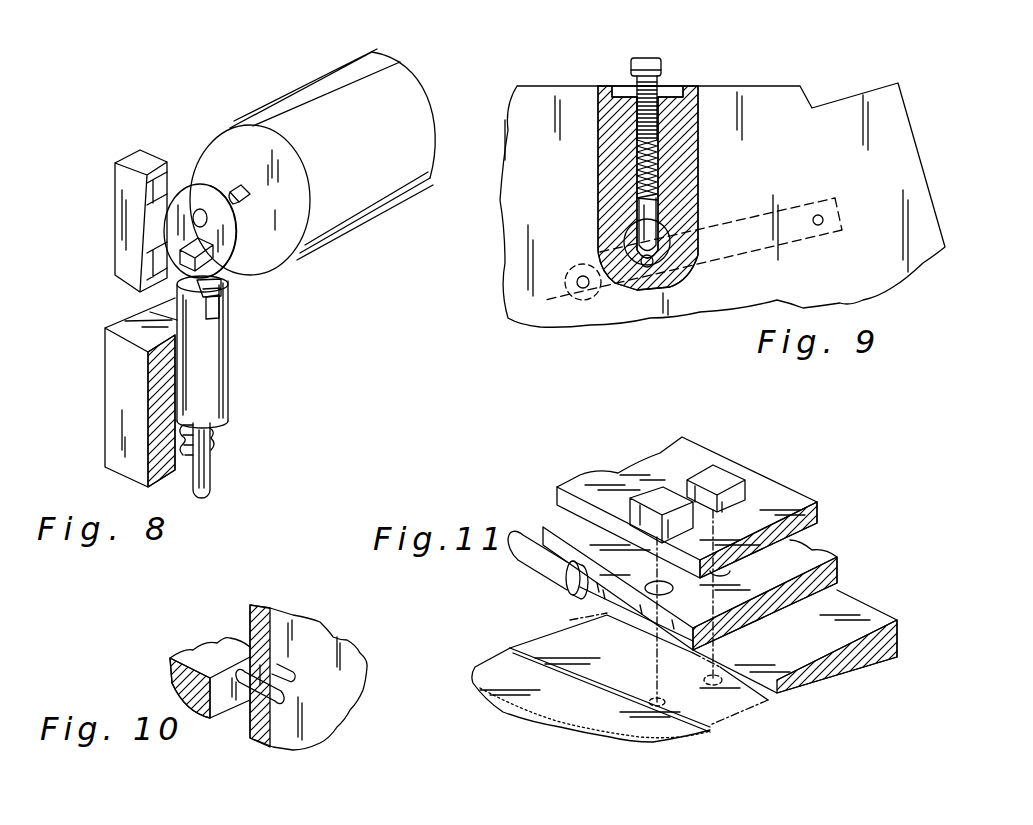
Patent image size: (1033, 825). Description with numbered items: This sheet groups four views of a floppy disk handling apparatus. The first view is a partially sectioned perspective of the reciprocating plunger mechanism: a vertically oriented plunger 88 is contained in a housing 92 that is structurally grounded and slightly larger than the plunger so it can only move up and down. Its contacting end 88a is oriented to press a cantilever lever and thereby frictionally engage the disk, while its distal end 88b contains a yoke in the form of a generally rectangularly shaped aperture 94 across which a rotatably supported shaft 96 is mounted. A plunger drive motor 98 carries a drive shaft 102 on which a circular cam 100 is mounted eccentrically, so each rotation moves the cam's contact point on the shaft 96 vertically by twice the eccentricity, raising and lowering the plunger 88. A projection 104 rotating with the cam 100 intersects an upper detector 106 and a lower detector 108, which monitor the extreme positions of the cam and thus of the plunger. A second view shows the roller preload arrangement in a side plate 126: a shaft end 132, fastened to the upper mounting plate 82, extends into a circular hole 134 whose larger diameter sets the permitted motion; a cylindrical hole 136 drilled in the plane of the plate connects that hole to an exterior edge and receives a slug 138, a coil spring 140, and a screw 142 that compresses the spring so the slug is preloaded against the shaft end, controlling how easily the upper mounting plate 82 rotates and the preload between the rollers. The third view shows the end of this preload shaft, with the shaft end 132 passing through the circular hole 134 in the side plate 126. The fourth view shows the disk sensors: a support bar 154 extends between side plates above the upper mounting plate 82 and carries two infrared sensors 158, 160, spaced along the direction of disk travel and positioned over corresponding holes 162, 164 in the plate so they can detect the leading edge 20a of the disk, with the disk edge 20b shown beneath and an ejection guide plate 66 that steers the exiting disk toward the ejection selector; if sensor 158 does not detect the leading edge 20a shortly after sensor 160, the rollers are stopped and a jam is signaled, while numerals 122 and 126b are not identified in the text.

In FIG. 8, the plunger drive motor 98 is at (307, 100).
In FIG. 8, the drive shaft 102 is at (238, 190).
In FIG. 8, the circular cam 100 is at (236, 243).
In FIG. 8, the projection 104 is at (232, 266).
In FIG. 8, the upper detector 106 is at (170, 177).
In FIG. 8, the lower detector 108 is at (158, 272).
In FIG. 8, the plunger 88 is at (221, 368).
In FIG. 8, the rotatably supported shaft 96 is at (220, 303).
In FIG. 8, the generally rectangularly shaped aperture 94 is at (212, 313).
In FIG. 8, the contacting end 88a is at (211, 487).
In FIG. 8, the distal end 88b is at (150, 312).
In FIG. 8, the housing 92 is at (158, 395).
In FIG. 9, the side plate 126 is at (670, 163).
In FIG. 10, the side plate 126 is at (313, 643).
In FIG. 9, the cylindrical hole 136 is at (663, 168).
In FIG. 9, the slug 138 is at (677, 203).
In FIG. 9, the screw 142 is at (662, 68).
In FIG. 9, the coil spring 140 is at (634, 177).
In FIG. 9, the circular hole 134 is at (634, 240).
In FIG. 10, the circular hole 134 is at (293, 678).
In FIG. 9, the shaft end 132 is at (672, 262).
In FIG. 10, the shaft end 132 is at (283, 698).
In FIG. 9, the upper mounting plate 82 is at (803, 243).
In FIG. 10, the upper mounting plate 82 is at (203, 657).
In FIG. 11, the upper mounting plate 82 is at (838, 562).
In FIG. 9, the pivot hole 122 is at (822, 215).
In FIG. 9, the plate hole 126b is at (538, 304).
In FIG. 11, the support bar 154 is at (782, 498).
In FIG. 11, the infrared sensor 158 is at (653, 493).
In FIG. 11, the infrared sensor 160 is at (714, 476).
In FIG. 11, the hole 162 is at (650, 583).
In FIG. 11, the hole 164 is at (725, 565).
In FIG. 11, the ejection guide plate 66 is at (867, 660).
In FIG. 11, the leading edge 20a is at (498, 670).
In FIG. 11, the sheet edge 20b is at (677, 722).